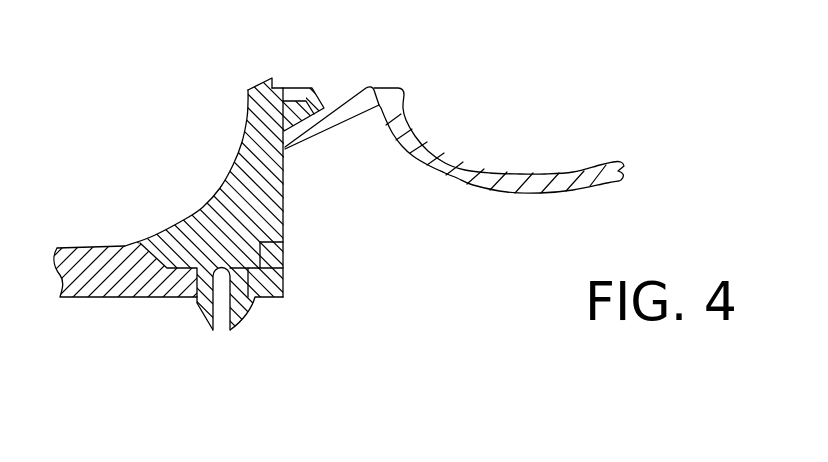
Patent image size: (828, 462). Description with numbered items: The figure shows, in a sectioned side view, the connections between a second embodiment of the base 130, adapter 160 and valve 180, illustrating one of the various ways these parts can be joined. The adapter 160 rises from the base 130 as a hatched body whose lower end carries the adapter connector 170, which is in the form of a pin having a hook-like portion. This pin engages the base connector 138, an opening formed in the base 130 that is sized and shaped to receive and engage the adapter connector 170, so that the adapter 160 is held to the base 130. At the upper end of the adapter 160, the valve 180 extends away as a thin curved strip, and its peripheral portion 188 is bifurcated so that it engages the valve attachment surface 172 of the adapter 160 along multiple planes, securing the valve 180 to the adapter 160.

The base 130 is at (80, 298).
The base connector 138 is at (183, 298).
The adapter 160 is at (200, 211).
The adapter connector 170 is at (247, 317).
The valve attachment surface 172 is at (275, 104).
The valve 180 is at (455, 177).
The peripheral portion 188 is at (300, 88).